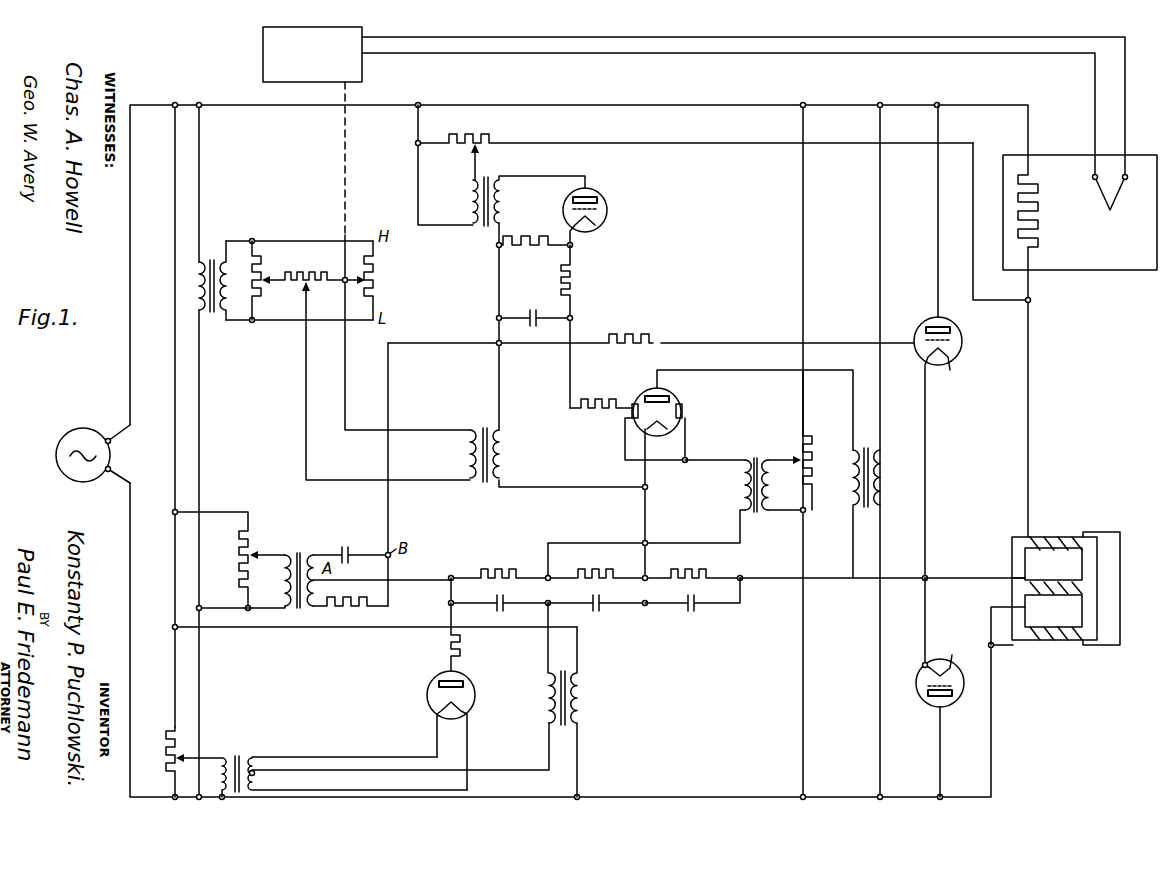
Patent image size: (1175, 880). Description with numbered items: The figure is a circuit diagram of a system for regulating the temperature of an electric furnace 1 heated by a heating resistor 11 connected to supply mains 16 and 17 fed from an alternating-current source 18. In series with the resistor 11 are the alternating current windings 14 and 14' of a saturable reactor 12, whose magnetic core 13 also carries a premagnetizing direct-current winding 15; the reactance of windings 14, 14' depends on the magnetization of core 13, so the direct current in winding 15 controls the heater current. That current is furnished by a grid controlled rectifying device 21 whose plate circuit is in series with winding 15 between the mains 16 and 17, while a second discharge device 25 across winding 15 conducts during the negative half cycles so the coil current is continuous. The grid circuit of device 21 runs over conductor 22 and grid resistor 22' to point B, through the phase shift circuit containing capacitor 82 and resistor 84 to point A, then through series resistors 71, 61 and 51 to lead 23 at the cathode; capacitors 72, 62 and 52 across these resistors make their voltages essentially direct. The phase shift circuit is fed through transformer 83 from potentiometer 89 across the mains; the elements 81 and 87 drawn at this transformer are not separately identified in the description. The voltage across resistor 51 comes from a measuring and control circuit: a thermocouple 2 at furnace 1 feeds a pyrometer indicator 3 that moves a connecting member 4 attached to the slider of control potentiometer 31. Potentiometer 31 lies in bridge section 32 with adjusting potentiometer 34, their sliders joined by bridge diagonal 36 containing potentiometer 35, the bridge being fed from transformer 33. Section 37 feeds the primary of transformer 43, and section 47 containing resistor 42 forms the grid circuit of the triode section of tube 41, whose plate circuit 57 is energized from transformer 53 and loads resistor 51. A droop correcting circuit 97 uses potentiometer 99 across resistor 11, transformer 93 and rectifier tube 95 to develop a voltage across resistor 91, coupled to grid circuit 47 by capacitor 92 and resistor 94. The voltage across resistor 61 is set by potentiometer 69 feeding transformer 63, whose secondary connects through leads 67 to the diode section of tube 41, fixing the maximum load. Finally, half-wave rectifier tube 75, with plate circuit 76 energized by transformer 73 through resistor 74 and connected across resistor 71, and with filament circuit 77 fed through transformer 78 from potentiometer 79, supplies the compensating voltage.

The electric furnace 1 is at (1068, 271).
The thermocouple 2 is at (1100, 198).
The pyrometer indicator 3 is at (263, 49).
The connecting member 4 is at (345, 141).
The heating resistor 11 is at (1036, 190).
The saturable reactor 12 is at (996, 597).
The magnetic core 13 is at (1010, 565).
The alternating current winding 14 is at (1056, 550).
The alternating current winding 14' is at (1056, 649).
The premagnetizing direct-current winding 15 is at (1044, 582).
The supply main 16 is at (130, 375).
The supply main 17 is at (130, 590).
The alternating-current source 18 is at (60, 446).
The grid controlled rectifying device 21 is at (933, 328).
The conductor 22 is at (787, 328).
The grid resistor 22' is at (525, 330).
The lead 23 is at (913, 573).
The second discharge device 25 is at (931, 694).
The control potentiometer 31 is at (376, 271).
The potentiometric bridge circuit 32 is at (305, 230).
The transformer 33 is at (217, 318).
The adjusting potentiometer 34 is at (262, 274).
The potentiometer 35 is at (308, 276).
The bridge diagonal 36 is at (288, 288).
The control circuit section 37 is at (345, 462).
The double purpose high-vacuum tube 41 is at (672, 403).
The resistor 42 is at (602, 403).
The transformer 43 is at (479, 422).
The grid circuit section 47 is at (550, 444).
The resistor 51 is at (688, 577).
The capacitor 52 is at (700, 607).
The transformer 53 is at (858, 505).
The plate circuit 57 is at (753, 418).
The resistor 61 is at (593, 577).
The capacitor 62 is at (603, 607).
The transformer 63 is at (753, 459).
The leads 67 is at (716, 459).
The potentiometer 69 is at (806, 459).
The resistor 71 is at (496, 577).
The capacitor 72 is at (507, 607).
The line-connected transformer 73 is at (578, 695).
The series resistor 74 is at (446, 653).
The half-wave rectifier tube 75 is at (446, 684).
The plate circuit 76 is at (510, 674).
The filament circuit 77 is at (352, 746).
The transformer 78 is at (235, 759).
The potentiometer 79 is at (167, 754).
The transformer winding 81 is at (378, 578).
The capacitor 82 is at (353, 551).
The transformer 83 is at (290, 555).
The resistor 84 is at (374, 607).
The transformer winding 87 is at (280, 594).
The potentiometer 89 is at (245, 556).
The resistor 91 is at (527, 243).
The parallel capacitor 92 is at (530, 316).
The transformer 93 is at (500, 201).
The series resistor 94 is at (578, 284).
The high-vacuum rectifier tube 95 is at (606, 200).
The droop correcting circuit 97 is at (528, 226).
The potentiometer 99 is at (473, 141).